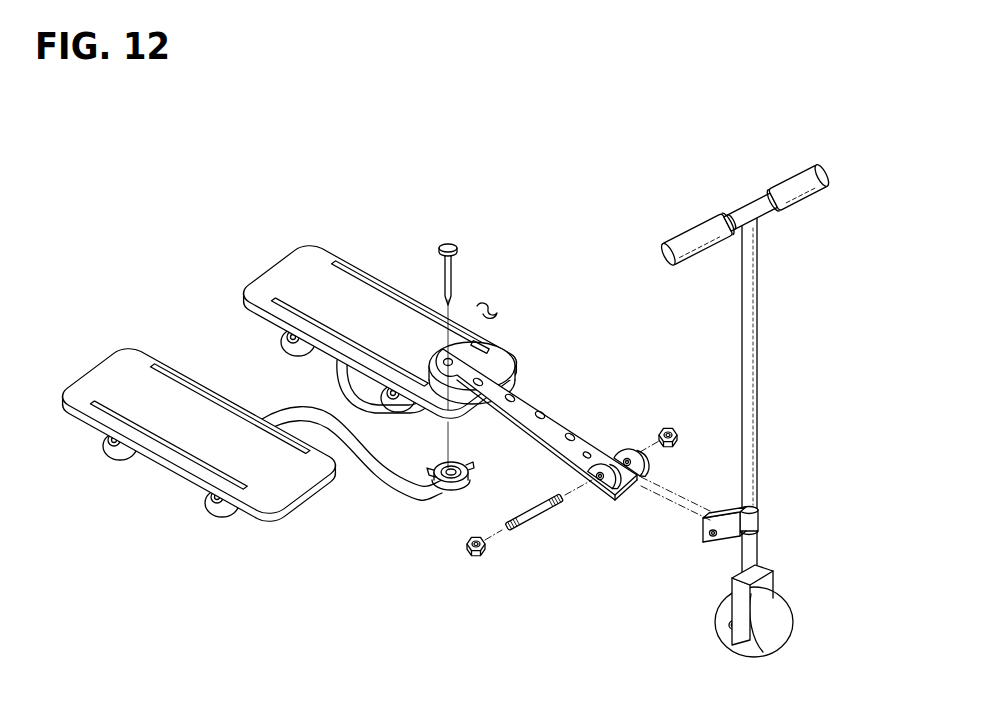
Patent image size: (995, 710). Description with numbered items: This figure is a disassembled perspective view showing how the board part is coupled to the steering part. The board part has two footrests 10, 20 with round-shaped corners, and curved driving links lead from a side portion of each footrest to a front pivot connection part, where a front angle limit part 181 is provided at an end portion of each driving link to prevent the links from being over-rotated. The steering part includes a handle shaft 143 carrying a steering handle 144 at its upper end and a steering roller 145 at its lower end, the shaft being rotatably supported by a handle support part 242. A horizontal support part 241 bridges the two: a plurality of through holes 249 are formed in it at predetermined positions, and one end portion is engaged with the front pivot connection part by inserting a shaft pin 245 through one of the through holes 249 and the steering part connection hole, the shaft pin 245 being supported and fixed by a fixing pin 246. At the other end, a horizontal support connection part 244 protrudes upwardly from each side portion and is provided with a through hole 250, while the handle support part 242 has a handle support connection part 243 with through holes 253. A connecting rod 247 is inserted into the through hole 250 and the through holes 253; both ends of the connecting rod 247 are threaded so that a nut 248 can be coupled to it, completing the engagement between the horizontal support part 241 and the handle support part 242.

The first footrest 10 is at (293, 270).
The second footrest 20 is at (107, 368).
The handle shaft 143 is at (758, 372).
The steering handle 144 is at (693, 238).
The steering roller 145 is at (777, 607).
The front angle limit part 181 is at (432, 484).
The horizontal support part 241 is at (530, 402).
The handle support part 242 is at (760, 518).
The handle support connection part 243 is at (723, 540).
The horizontal support connection part 244 is at (602, 490).
The shaft pin 245 is at (453, 248).
The fixing pin 246 is at (483, 307).
The connecting rod 247 is at (527, 520).
The nut 248 is at (467, 545).
The through holes 249 is at (484, 346).
The through hole 250 is at (583, 468).
The through holes 253 is at (703, 540).